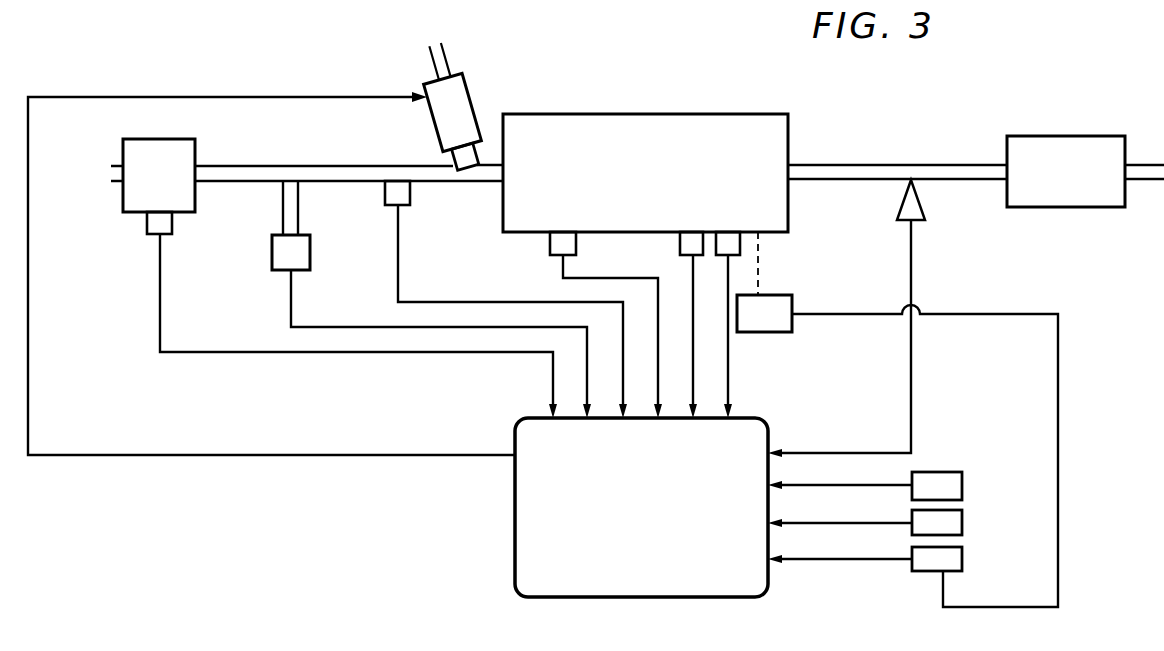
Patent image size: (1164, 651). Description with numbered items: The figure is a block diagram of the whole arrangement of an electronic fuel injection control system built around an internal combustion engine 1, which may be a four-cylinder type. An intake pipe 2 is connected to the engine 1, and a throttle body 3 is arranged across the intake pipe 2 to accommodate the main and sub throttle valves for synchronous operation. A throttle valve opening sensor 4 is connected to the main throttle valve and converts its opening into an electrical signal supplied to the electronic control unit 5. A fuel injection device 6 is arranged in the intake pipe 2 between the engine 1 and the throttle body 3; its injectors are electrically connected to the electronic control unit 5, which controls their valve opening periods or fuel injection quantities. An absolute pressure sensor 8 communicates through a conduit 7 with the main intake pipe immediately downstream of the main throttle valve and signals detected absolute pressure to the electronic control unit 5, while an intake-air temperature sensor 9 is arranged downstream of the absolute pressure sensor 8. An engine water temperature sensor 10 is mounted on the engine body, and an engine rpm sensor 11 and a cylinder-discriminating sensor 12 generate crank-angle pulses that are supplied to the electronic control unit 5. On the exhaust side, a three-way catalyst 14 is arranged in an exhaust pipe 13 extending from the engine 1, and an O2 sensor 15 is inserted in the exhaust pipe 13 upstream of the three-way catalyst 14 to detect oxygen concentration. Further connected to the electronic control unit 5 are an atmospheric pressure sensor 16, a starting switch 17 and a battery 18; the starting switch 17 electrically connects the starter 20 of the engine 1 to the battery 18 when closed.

The internal combustion engine 1 is at (700, 113).
The intake pipe 2 is at (341, 166).
The throttle body 3 is at (195, 150).
The throttle valve opening sensor 4 is at (172, 224).
The electronic control unit 5 is at (520, 572).
The fuel injection device 6 is at (462, 102).
The conduit 7 is at (298, 207).
The absolute pressure sensor 8 is at (310, 257).
The intake-air temperature sensor 9 is at (410, 195).
The engine water temperature sensor 10 is at (550, 252).
The engine rpm sensor 11 is at (680, 245).
The cylinder-discriminating sensor 12 is at (740, 247).
The exhaust pipe 13 is at (876, 165).
The three-way catalyst 14 is at (1085, 138).
The O2 sensor 15 is at (925, 205).
The atmospheric pressure sensor 16 is at (962, 523).
The starting switch 17 is at (962, 559).
The battery 18 is at (962, 485).
The starter 20 is at (765, 332).